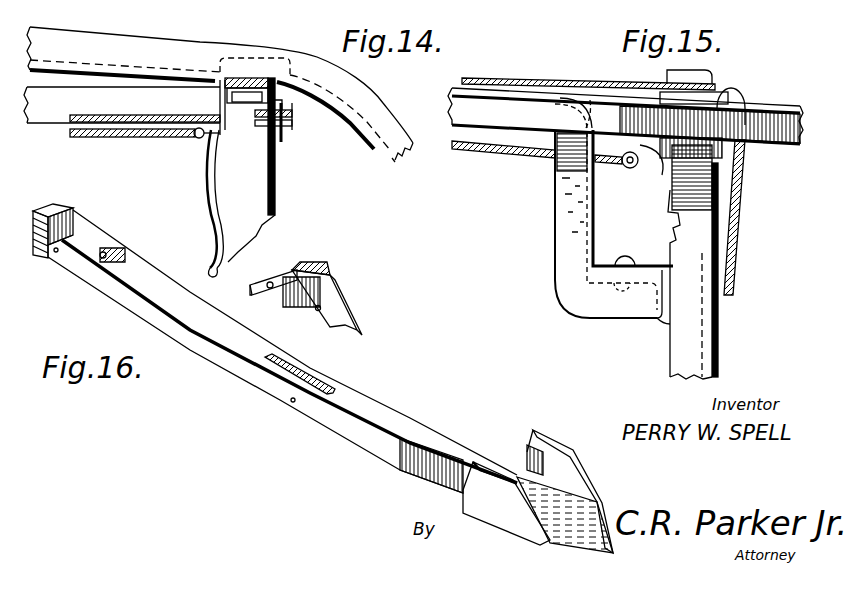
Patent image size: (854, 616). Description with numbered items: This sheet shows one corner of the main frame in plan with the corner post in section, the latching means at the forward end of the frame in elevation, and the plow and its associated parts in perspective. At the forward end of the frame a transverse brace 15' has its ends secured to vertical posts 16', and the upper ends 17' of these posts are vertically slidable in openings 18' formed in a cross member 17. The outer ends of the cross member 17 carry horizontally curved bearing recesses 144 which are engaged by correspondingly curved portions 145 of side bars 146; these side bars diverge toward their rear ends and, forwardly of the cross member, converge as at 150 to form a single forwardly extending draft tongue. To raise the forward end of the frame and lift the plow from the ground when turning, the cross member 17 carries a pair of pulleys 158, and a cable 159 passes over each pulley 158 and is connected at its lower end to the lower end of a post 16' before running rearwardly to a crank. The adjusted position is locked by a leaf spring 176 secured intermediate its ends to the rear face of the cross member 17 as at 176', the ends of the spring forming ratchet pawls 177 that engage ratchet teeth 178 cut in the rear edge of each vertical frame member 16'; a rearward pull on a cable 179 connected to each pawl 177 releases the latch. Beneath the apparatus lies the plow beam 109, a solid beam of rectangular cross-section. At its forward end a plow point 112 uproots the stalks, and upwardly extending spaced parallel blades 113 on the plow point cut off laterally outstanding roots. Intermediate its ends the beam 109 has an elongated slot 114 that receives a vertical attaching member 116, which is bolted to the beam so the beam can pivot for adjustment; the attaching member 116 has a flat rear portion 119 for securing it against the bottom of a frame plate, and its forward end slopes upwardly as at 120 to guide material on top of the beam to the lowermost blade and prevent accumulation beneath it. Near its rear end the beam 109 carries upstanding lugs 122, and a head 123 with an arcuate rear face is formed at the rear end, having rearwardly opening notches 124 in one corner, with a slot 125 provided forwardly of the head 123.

In FIG. 14, the side bars 146 is at (163, 45).
In FIG. 15, the side bars 146 is at (592, 110).
In FIG. 14, the horizontally curved bearing recesses 144 is at (240, 78).
In FIG. 15, the horizontally curved bearing recesses 144 is at (745, 156).
In FIG. 14, the curved portions of side bars 145 is at (282, 82).
In FIG. 14, the cable 159 is at (110, 115).
In FIG. 15, the cable 159 is at (530, 78).
In FIG. 14, the cable 179 is at (72, 134).
In FIG. 15, the cable 179 is at (517, 158).
In FIG. 14, the upper ends of posts 17' is at (244, 124).
In FIG. 15, the upper ends of posts 17' is at (698, 76).
In FIG. 14, the cross member 17 is at (272, 170).
In FIG. 14, the pulleys 158 is at (292, 130).
In FIG. 15, the pulleys 158 is at (740, 90).
In FIG. 14, the openings 18' is at (301, 107).
In FIG. 14, the leaf spring 176 is at (193, 199).
In FIG. 15, the leaf spring 176 is at (614, 224).
In FIG. 14, the securing point of leaf spring 176' is at (197, 261).
In FIG. 15, the securing point of leaf spring 176' is at (614, 115).
In FIG. 14, the converging portion of side bars 150 is at (380, 147).
In FIG. 15, the ratchet pawls 177 is at (655, 177).
In FIG. 15, the ratchet teeth 178 is at (667, 218).
In FIG. 15, the vertical posts 16' is at (714, 271).
In FIG. 15, the transverse brace 15' is at (643, 337).
In FIG. 16, the plow beam 109 is at (415, 412).
In FIG. 16, the rearwardly opening notches 124 is at (30, 222).
In FIG. 16, the head 123 is at (88, 180).
In FIG. 16, the slot 125 is at (73, 227).
In FIG. 16, the upstanding lugs 122 is at (130, 260).
In FIG. 16, the flat rear portion 119 is at (278, 273).
In FIG. 16, the upwardly sloping forward end 120 is at (347, 310).
In FIG. 16, the vertical attaching member 116 is at (330, 315).
In FIG. 16, the elongated slot 114 is at (333, 382).
In FIG. 16, the blades 113 is at (565, 436).
In FIG. 16, the plow point 112 is at (613, 555).